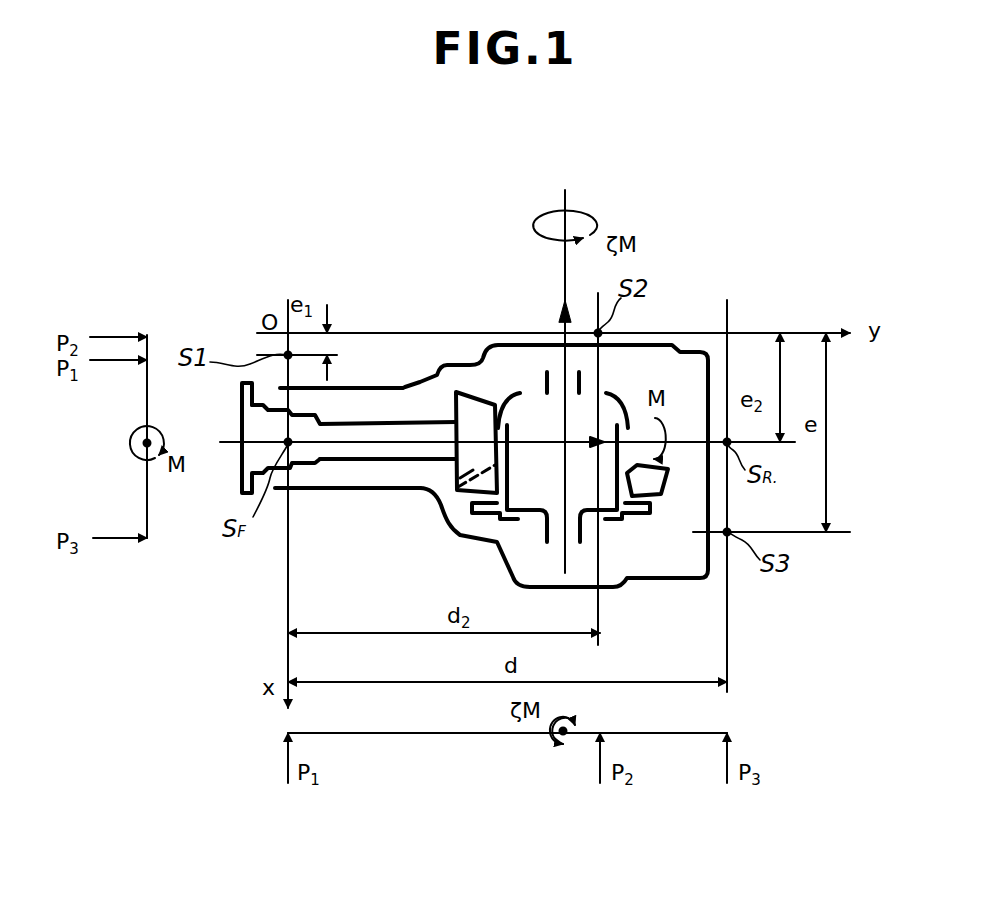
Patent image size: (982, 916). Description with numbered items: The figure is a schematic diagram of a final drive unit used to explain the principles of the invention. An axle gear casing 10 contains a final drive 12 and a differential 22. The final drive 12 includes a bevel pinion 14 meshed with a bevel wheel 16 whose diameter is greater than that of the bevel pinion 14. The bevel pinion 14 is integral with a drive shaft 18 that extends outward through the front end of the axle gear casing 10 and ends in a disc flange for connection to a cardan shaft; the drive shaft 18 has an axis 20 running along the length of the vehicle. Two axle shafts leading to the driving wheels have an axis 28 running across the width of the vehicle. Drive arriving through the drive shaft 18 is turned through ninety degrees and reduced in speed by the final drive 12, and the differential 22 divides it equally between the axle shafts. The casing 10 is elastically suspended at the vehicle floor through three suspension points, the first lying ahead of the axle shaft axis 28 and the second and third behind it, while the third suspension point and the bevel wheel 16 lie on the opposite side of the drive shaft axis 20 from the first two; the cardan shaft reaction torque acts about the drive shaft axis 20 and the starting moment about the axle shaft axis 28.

The axle gear casing 10 is at (657, 582).
The final drive 12 is at (428, 475).
The bevel pinion 14 is at (470, 393).
The bevel wheel 16 is at (470, 498).
The drive shaft 18 is at (362, 452).
The drive shaft axis 20 is at (345, 442).
The differential 22 is at (510, 393).
The axle shaft axis 28 is at (562, 355).